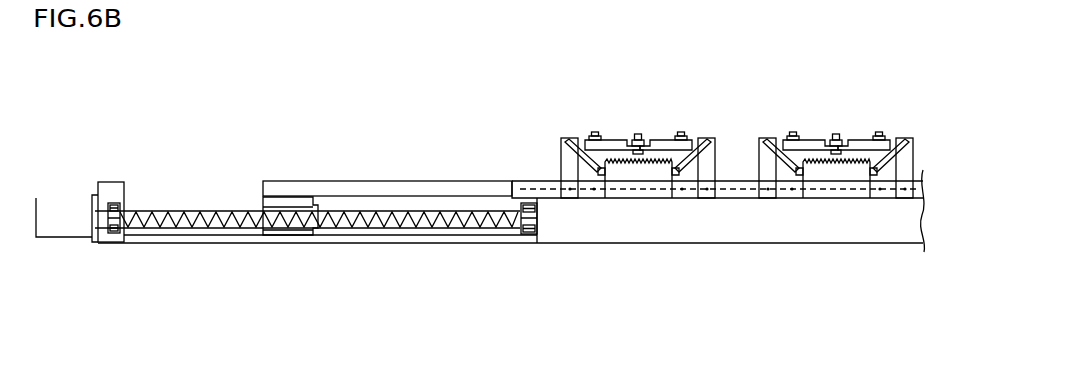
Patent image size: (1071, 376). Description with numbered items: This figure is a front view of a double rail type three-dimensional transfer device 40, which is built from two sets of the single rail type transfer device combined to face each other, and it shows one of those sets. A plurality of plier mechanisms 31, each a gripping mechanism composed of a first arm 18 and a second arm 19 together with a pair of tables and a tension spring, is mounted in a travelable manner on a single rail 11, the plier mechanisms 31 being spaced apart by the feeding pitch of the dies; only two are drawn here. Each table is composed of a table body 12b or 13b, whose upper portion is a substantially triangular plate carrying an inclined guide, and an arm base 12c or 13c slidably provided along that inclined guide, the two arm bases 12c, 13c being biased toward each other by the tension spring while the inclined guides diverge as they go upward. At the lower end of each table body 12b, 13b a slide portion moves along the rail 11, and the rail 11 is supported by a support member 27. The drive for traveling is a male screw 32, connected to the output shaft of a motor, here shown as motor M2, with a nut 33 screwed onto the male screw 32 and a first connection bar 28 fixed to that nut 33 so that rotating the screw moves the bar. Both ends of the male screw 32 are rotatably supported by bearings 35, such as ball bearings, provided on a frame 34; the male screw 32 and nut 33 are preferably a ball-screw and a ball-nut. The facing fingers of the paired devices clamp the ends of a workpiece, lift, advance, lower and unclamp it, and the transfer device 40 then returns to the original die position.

The second motor M2 is at (72, 210).
The rail 11 is at (740, 192).
The table body 12b is at (565, 168).
The arm base 12c is at (583, 147).
The table body 13b is at (720, 163).
The arm base 13c is at (700, 138).
The first arm 18 is at (612, 138).
The second arm 19 is at (663, 138).
The support member 27 is at (632, 228).
The first connection bar 28 is at (427, 187).
The plier mechanism 31 is at (705, 115).
The male screw 32 is at (140, 210).
The nut 33 is at (288, 203).
The frame 34 is at (217, 243).
The bearing 35 is at (112, 222).
The transfer device 40 is at (835, 112).